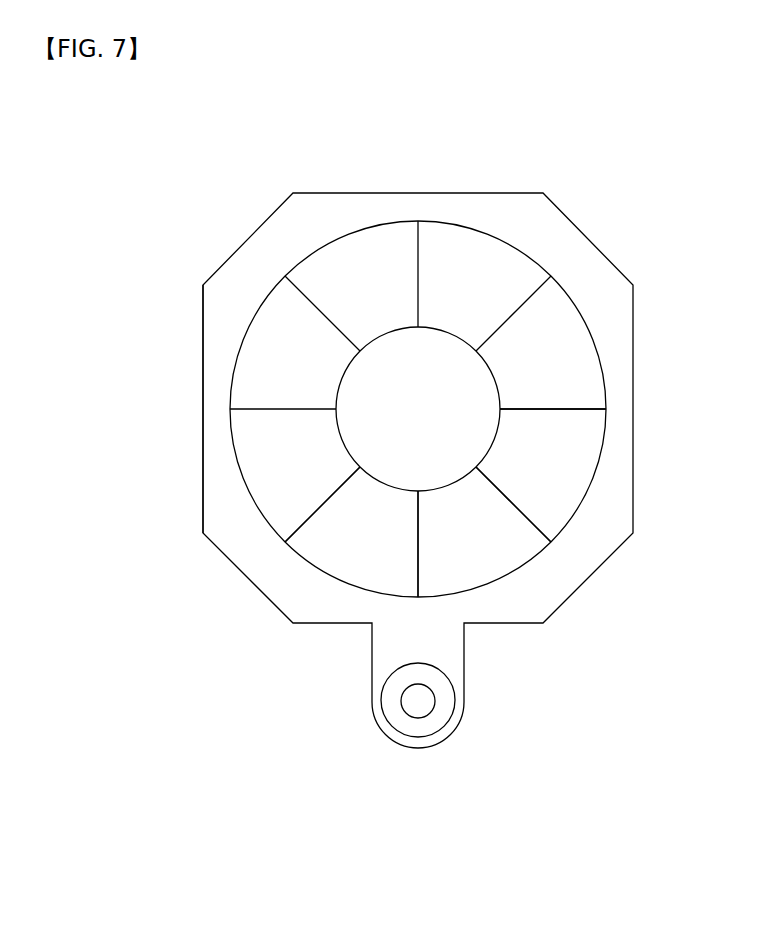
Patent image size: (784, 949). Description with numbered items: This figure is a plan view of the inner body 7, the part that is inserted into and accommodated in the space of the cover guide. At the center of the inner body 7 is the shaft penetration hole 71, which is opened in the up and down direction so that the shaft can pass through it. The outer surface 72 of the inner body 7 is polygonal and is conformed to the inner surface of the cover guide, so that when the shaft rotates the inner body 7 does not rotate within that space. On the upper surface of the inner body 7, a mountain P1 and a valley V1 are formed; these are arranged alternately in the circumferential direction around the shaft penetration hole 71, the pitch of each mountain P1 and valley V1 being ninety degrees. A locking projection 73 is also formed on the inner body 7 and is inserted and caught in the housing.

The inner body 7 is at (257, 237).
The shaft penetration hole 71 is at (417, 391).
The outer surface 72 is at (203, 480).
The locking projection 73 is at (417, 703).
The mountain P1 is at (322, 505).
The valley V1 is at (552, 411).